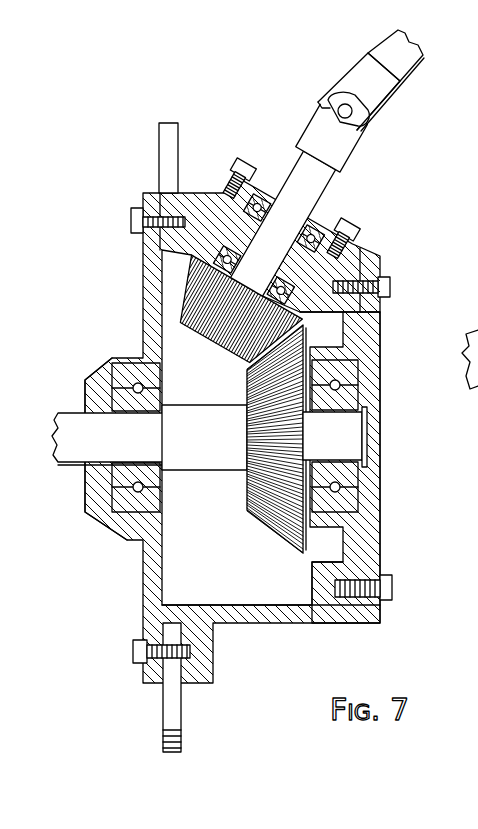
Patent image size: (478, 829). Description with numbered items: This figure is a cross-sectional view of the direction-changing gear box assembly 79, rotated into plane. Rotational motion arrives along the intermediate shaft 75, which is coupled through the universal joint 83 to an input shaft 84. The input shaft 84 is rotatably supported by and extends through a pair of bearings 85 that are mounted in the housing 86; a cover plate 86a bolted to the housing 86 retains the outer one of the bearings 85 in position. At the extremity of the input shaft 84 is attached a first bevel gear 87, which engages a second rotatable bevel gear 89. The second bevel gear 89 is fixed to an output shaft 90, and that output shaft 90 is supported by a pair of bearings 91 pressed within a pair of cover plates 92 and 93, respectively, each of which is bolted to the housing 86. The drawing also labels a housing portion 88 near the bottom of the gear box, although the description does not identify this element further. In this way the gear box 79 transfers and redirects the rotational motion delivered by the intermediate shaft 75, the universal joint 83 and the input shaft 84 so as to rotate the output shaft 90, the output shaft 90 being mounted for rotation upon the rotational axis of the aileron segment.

The intermediate shaft 75 is at (380, 45).
The direction-changing gear box assembly 79 is at (253, 640).
The universal joint 83 is at (322, 102).
The input shaft 84 is at (330, 180).
The bearings 85 is at (240, 218).
The housing 86 is at (360, 252).
The cover plate 86a is at (266, 180).
The first bevel gear 87 is at (237, 362).
The gear housing 88 is at (298, 625).
The second bevel gear 89 is at (283, 538).
The output shaft 90 is at (375, 443).
The bearings 91 is at (112, 368).
The cover plate 92 is at (378, 537).
The cover plate 93 is at (142, 573).